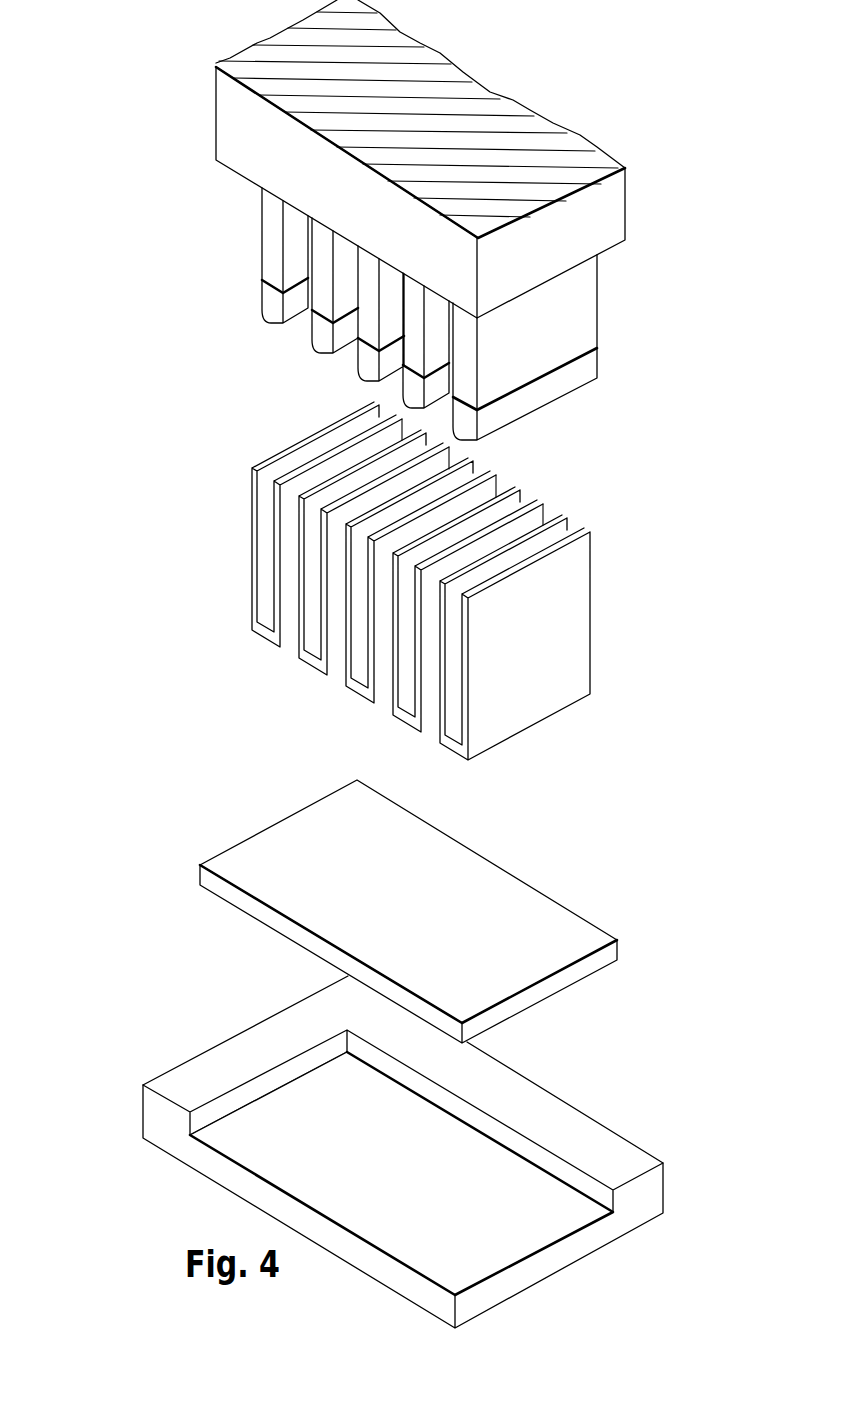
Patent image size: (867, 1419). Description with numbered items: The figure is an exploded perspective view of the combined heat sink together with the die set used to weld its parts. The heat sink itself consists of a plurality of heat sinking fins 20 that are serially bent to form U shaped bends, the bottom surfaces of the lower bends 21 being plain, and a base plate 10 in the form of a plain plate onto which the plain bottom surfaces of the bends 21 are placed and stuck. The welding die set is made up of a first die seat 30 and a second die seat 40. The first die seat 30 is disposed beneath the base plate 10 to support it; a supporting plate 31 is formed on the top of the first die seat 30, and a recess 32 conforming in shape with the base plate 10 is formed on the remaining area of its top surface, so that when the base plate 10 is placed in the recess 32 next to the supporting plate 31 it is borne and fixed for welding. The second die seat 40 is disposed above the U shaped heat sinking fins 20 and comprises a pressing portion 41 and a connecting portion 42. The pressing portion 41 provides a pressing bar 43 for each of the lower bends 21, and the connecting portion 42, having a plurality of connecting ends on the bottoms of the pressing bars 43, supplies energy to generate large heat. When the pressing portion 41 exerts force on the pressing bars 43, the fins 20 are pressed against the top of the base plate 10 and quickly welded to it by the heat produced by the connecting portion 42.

The base plate 10 is at (282, 845).
The heat sinking fins 20 is at (580, 612).
The lower bends 21 is at (267, 623).
The first die seat 30 is at (198, 1050).
The supporting plate 31 is at (152, 1122).
The recess 32 is at (557, 1222).
The second die seat 40 is at (603, 302).
The pressing portion 41 is at (232, 130).
The connecting portion 42 is at (560, 380).
The pressing bar 43 is at (277, 238).